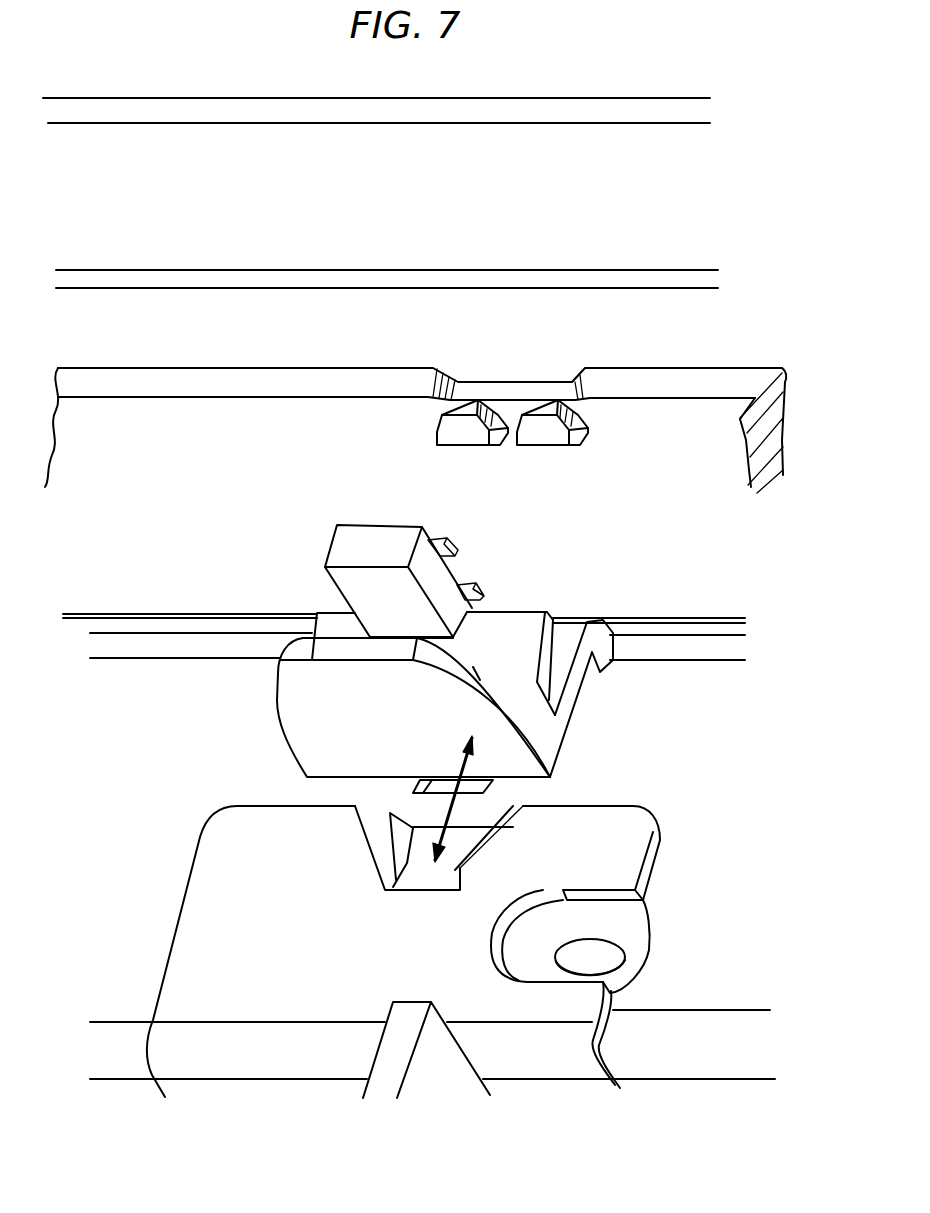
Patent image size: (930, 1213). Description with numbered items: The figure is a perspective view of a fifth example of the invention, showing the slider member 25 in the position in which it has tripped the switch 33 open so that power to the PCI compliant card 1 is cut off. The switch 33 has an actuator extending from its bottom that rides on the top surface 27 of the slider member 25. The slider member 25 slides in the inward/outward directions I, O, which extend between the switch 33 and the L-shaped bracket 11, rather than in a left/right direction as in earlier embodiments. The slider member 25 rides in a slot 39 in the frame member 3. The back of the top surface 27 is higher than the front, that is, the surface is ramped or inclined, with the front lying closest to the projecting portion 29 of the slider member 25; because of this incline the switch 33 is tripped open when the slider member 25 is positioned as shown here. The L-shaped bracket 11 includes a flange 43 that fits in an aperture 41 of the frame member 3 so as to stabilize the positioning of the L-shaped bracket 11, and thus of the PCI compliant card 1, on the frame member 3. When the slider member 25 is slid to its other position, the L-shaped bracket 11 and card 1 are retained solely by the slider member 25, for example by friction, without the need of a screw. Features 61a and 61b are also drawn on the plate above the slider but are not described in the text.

The PCI compliant card 1 is at (367, 1098).
The frame member 3 is at (791, 850).
The L-shaped bracket 11 is at (630, 848).
The slider member 25 is at (606, 700).
The top surface 27 is at (513, 637).
The projecting portion 29 is at (302, 693).
The switch 33 is at (373, 543).
The slot 39 is at (493, 793).
The aperture 41 is at (430, 867).
The flange 43 is at (410, 833).
The first tab 61a is at (468, 405).
The second tab 61b is at (545, 405).
The inward direction I is at (463, 743).
The outward direction O is at (467, 867).